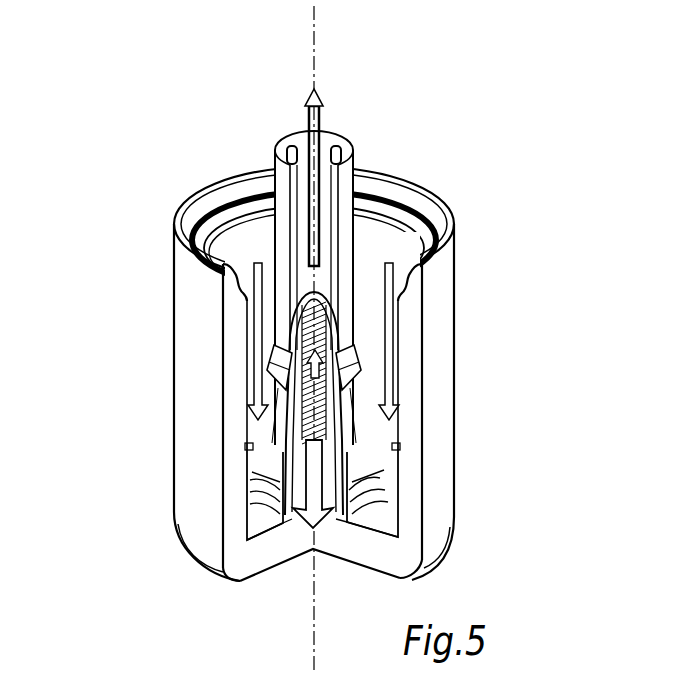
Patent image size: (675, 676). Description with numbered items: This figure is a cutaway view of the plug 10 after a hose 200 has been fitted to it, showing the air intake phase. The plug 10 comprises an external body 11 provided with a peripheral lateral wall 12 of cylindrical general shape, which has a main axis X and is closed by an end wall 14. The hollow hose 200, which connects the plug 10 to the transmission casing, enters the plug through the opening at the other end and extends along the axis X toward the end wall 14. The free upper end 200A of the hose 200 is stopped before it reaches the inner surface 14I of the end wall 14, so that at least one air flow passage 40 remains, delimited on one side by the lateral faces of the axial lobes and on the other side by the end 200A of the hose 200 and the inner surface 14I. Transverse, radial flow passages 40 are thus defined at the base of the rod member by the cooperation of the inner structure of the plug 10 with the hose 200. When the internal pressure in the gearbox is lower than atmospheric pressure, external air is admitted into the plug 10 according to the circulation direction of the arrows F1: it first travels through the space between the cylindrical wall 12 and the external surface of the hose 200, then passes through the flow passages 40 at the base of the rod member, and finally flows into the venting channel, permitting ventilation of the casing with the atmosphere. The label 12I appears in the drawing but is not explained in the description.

The main axis X is at (316, 78).
The plug 10 is at (525, 177).
The external body 11 is at (168, 283).
The peripheral lateral wall 12 is at (435, 292).
The inner rim groove 12I is at (213, 203).
The end wall 14 is at (263, 581).
The inner surface of the end wall 14I is at (400, 530).
The air flow passages 40 is at (247, 513).
The hose 200 is at (372, 152).
The free upper end of the hose 200A is at (380, 449).
The arrows F1 is at (307, 170).